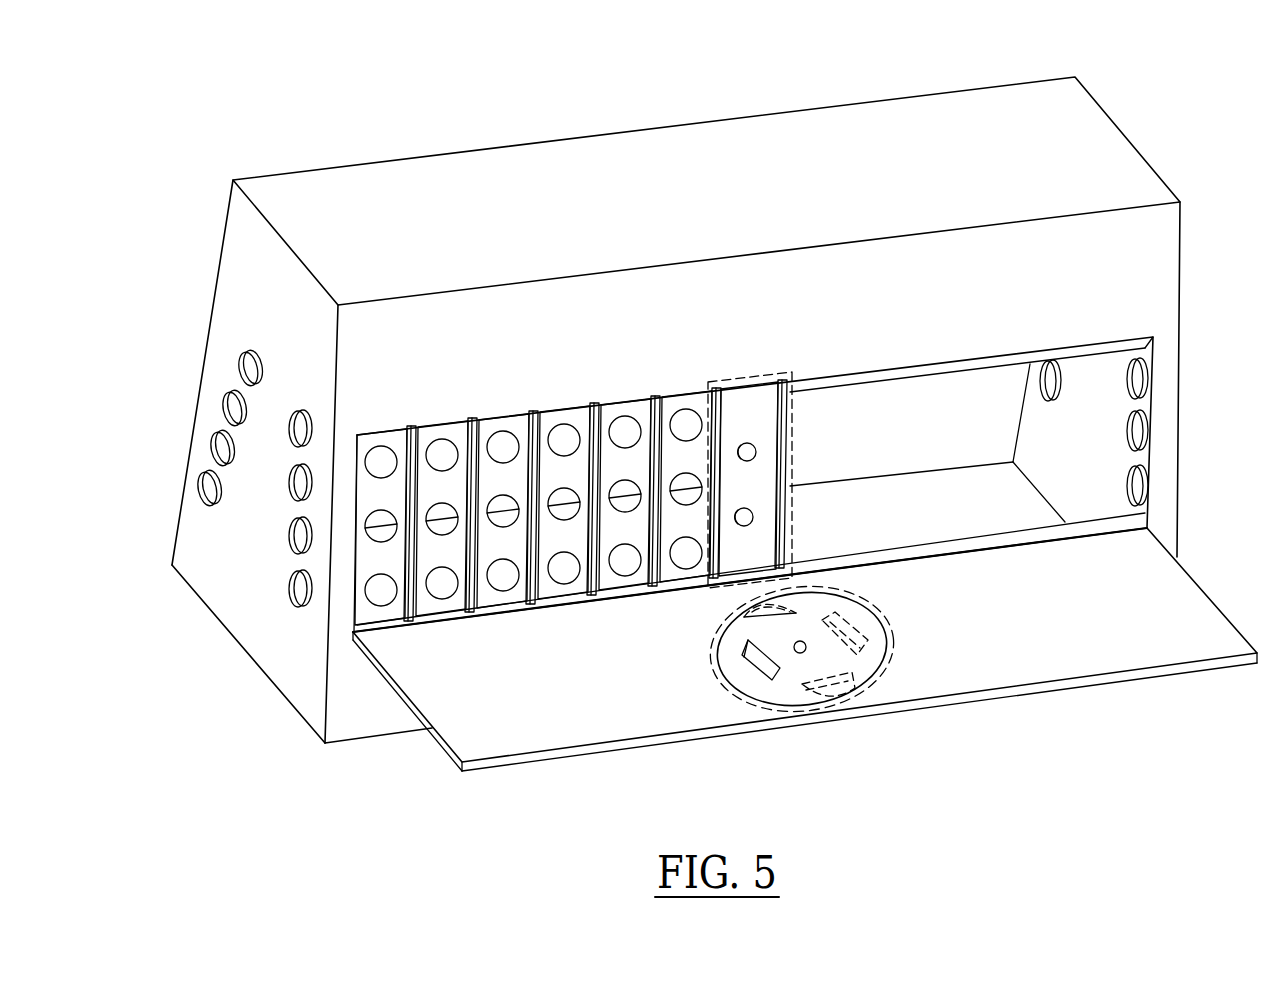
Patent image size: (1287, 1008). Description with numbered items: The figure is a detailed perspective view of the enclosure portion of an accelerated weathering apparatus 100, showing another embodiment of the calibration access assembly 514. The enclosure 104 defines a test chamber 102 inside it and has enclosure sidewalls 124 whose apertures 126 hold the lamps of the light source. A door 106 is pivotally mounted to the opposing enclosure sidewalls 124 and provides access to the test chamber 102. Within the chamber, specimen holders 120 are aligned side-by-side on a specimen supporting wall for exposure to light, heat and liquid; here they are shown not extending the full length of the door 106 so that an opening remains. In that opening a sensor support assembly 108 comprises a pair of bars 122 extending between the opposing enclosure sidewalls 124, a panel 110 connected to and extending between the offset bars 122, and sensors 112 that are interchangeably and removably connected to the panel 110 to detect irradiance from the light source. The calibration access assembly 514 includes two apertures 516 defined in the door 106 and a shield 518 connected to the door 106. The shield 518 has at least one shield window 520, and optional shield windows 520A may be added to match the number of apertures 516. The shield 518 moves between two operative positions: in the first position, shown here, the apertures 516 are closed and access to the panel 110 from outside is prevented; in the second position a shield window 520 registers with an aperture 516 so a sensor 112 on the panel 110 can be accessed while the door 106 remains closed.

The accelerated weathering apparatus 100 is at (487, 130).
The test chamber 102 is at (916, 402).
The enclosure 104 is at (1110, 163).
The door 106 is at (530, 727).
The sensor support assembly 108 is at (793, 421).
The panel 110 is at (757, 472).
The sensor 112 is at (748, 443).
The specimen holder 120 is at (463, 430).
The bar 122 is at (1152, 345).
The enclosure sidewall 124 is at (245, 611).
The aperture 126 is at (232, 393).
The calibration access assembly 514 is at (752, 690).
The aperture 516 is at (718, 608).
The shield 518 is at (880, 665).
The shield window 520 is at (745, 655).
The optional shield window 520A is at (870, 637).